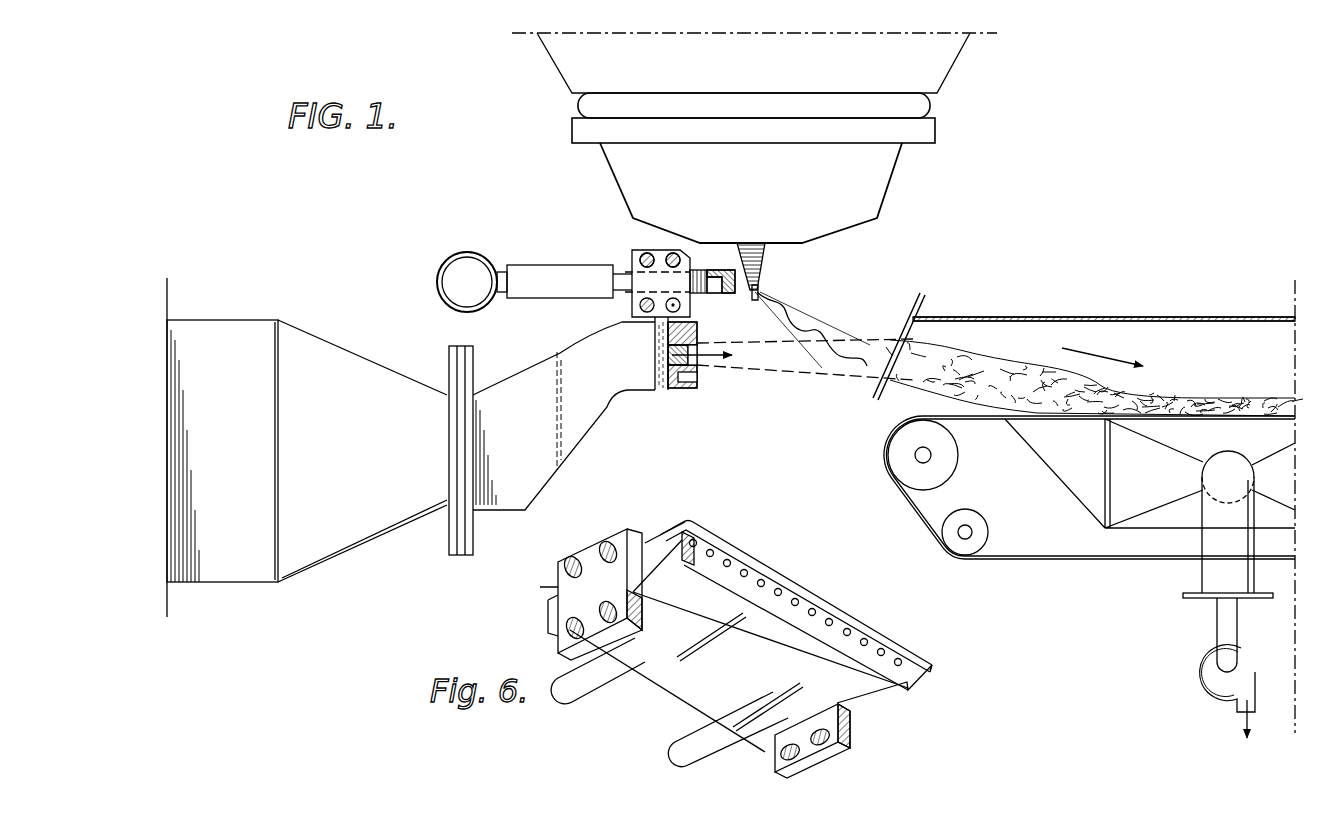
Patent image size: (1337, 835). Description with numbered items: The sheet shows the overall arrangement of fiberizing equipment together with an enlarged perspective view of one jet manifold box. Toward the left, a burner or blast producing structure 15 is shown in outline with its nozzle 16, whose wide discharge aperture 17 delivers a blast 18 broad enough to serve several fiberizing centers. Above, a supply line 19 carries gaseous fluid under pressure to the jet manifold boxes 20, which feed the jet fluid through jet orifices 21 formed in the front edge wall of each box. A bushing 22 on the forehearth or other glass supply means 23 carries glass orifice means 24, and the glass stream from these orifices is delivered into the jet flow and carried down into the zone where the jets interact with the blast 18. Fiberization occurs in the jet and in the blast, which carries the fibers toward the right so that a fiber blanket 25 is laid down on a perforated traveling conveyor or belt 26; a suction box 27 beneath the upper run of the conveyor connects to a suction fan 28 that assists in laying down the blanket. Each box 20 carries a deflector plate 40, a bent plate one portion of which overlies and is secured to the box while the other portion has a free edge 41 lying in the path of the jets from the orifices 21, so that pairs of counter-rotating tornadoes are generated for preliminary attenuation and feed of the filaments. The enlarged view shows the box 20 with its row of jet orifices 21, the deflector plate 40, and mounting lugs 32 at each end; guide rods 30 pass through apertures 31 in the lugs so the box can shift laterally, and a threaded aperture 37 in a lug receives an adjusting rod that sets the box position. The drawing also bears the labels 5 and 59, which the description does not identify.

In FIG. 1, the strand of material 5 is at (778, 318).
In FIG. 1, the burner or blast producing structure 15 is at (215, 318).
In FIG. 1, the nozzle 16 is at (569, 430).
In FIG. 1, the discharge aperture 17 is at (690, 352).
In FIG. 1, the blast 18 is at (778, 367).
In FIG. 1, the supply line 19 is at (445, 262).
In FIG. 1, the jet manifold box 20 is at (700, 268).
In FIG. 6, the jet manifold box 20 is at (880, 700).
In FIG. 1, the jet orifice 21 is at (728, 292).
In FIG. 6, the jet orifice 21 is at (726, 567).
In FIG. 1, the bushing 22 is at (765, 247).
In FIG. 1, the forehearth or glass supply means 23 is at (902, 163).
In FIG. 1, the glass orifice means 24 is at (760, 270).
In FIG. 1, the fiber blanket 25 is at (1238, 406).
In FIG. 1, the perforated traveling conveyor or belt 26 is at (985, 419).
In FIG. 1, the suction box 27 is at (1150, 479).
In FIG. 1, the suction fan 28 is at (1221, 690).
In FIG. 1, the guide rods 30 is at (670, 256).
In FIG. 6, the apertures 31 is at (604, 548).
In FIG. 1, the mounting lugs 32 is at (632, 308).
In FIG. 6, the threaded aperture 37 is at (608, 622).
In FIG. 1, the deflector plate 40 is at (740, 270).
In FIG. 6, the deflector plate 40 is at (754, 563).
In FIG. 6, the free edge 41 is at (930, 668).
In FIG. 1, the cylinder 59 is at (541, 266).